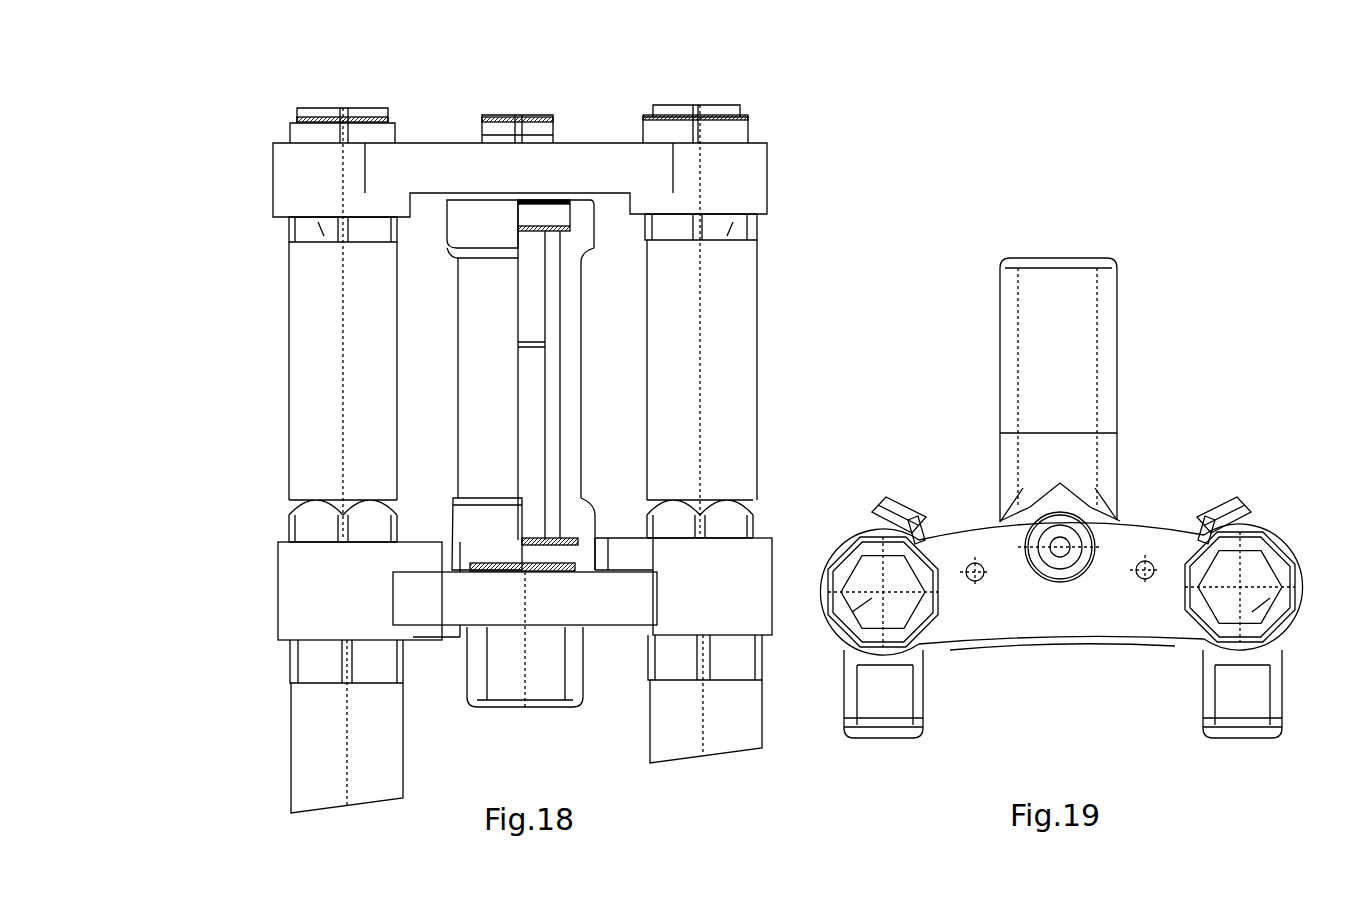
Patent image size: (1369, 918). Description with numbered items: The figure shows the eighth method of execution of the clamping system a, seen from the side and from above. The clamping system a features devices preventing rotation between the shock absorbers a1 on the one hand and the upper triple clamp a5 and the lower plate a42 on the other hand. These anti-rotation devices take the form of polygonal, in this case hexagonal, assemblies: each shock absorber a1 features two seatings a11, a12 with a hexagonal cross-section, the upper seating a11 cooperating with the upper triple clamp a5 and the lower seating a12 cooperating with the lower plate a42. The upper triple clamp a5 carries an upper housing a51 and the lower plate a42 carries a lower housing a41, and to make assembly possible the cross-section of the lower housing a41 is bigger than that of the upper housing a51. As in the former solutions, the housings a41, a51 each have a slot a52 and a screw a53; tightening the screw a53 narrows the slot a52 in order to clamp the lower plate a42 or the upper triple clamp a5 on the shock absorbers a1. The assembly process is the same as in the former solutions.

In FIG. 18, the clamping system a is at (812, 124).
In FIG. 19, the clamping system a is at (1250, 271).
In FIG. 18, the shock absorbers a1 is at (322, 405).
In FIG. 19, the shock absorbers a1 is at (838, 640).
In FIG. 18, the seating a11 is at (290, 227).
In FIG. 19, the seating a11 is at (982, 640).
In FIG. 18, the seating a12 is at (288, 531).
In FIG. 18, the lower housing a41 is at (318, 690).
In FIG. 18, the lower plate a42 is at (463, 637).
In FIG. 18, the upper triple clamp a5 is at (432, 158).
In FIG. 19, the upper triple clamp a5 is at (1037, 640).
In FIG. 18, the upper housing a51 is at (322, 250).
In FIG. 19, the upper housing a51 is at (848, 566).
In FIG. 19, the slot a52 is at (928, 495).
In FIG. 19, the screw a53 is at (935, 545).